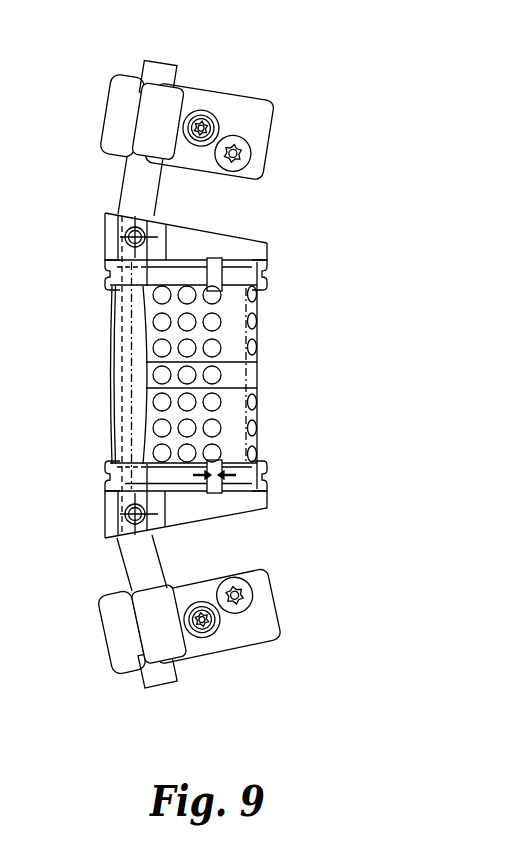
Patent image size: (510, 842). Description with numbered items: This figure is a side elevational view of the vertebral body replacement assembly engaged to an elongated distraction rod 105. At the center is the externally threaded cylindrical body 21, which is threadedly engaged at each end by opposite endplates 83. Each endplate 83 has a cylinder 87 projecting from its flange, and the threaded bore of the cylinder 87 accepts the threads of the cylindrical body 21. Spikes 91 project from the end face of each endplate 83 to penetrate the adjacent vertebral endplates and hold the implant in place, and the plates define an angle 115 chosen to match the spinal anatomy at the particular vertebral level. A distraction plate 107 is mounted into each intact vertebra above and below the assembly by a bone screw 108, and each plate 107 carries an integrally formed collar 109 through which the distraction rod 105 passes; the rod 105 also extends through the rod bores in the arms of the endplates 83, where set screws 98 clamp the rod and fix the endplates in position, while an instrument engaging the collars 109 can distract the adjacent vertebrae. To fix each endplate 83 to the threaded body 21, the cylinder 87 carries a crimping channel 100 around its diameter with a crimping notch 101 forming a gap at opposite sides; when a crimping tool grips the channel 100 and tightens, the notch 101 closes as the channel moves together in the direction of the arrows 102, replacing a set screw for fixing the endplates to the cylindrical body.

The cylindrical body 21 is at (268, 344).
The endplate 83 is at (277, 251).
The cylinder 87 is at (268, 466).
The spike 91 is at (109, 213).
The set screw 98 is at (125, 240).
The crimping channel 100 is at (268, 481).
The crimping notch 101 is at (216, 462).
The arrows 102 is at (200, 490).
The distraction rod 105 is at (196, 674).
The distraction plate 107 is at (283, 90).
The bone screw 108 is at (217, 116).
The collar 109 is at (158, 124).
The angle 115 is at (259, 217).